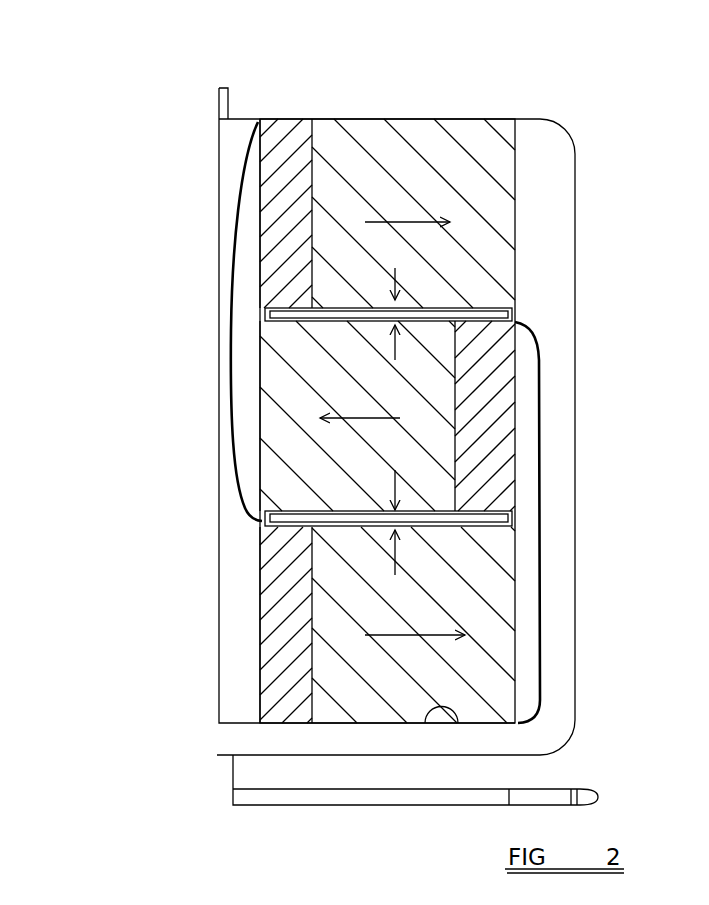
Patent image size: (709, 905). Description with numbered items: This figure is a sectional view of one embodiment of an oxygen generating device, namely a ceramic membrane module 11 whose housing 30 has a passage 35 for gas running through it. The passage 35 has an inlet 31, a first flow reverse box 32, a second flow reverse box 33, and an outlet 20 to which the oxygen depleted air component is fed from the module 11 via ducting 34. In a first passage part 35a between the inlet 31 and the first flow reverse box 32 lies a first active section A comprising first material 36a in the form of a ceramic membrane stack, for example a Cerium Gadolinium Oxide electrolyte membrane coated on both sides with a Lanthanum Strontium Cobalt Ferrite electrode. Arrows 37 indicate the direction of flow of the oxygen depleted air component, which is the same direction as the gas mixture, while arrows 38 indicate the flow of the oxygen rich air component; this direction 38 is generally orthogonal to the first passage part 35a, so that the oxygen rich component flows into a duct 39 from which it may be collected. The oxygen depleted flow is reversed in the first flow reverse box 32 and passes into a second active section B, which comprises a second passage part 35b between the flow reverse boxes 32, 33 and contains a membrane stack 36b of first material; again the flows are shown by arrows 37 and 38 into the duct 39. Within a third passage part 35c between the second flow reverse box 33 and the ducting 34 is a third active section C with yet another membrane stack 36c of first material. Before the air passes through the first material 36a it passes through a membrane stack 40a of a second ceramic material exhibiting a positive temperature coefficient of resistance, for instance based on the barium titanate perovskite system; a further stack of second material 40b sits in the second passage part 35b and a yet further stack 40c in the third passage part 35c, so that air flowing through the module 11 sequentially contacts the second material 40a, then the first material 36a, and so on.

The ceramic membrane module 11 is at (585, 257).
The outlet 20 is at (260, 743).
The housing 30 is at (297, 117).
The inlet 31 is at (218, 630).
The first flow reverse box 32 is at (545, 548).
The second flow reverse box 33 is at (245, 390).
The ducting 34 is at (562, 597).
The passage 35 is at (443, 738).
The first passage part 35a is at (500, 637).
The second passage part 35b is at (268, 345).
The third passage part 35c is at (336, 126).
The first material 36a is at (500, 700).
The membrane stack of first material 36b is at (265, 492).
The membrane stack of first material 36c is at (493, 126).
The direction of flow of oxygen depleted air component 37 is at (410, 222).
The direction of flow of oxygen rich air component 38 is at (398, 285).
The duct 39 is at (512, 306).
The membrane stack of second ceramic material 40a is at (263, 677).
The membrane stack of second material 40b is at (487, 427).
The membrane stack of second material 40c is at (262, 212).
The first active section A is at (407, 692).
The second active section B is at (412, 416).
The third active section C is at (393, 164).